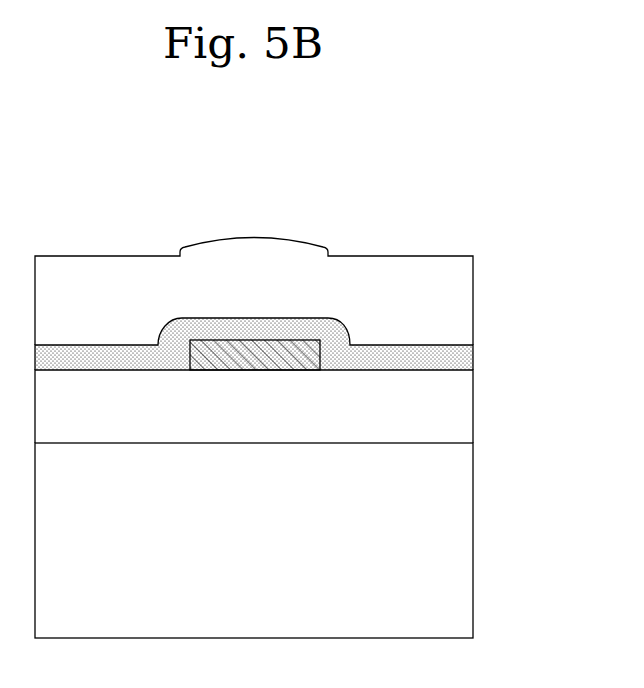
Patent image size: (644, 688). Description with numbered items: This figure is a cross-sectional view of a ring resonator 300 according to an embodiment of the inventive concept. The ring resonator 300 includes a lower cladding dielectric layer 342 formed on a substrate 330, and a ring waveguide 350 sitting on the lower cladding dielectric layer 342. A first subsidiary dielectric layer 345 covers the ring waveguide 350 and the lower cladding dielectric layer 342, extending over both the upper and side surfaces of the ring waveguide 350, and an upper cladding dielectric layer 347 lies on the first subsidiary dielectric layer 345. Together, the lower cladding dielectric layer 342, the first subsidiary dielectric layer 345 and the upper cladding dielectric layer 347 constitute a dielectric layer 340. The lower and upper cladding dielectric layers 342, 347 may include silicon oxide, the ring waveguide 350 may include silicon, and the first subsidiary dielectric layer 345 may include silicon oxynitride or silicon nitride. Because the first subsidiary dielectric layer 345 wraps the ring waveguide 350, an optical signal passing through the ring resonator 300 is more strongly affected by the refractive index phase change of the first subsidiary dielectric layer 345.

The ring resonator 300 is at (533, 168).
The substrate 330 is at (467, 548).
The dielectric layer 340 is at (322, 341).
The lower cladding dielectric layer 342 is at (467, 406).
The first subsidiary dielectric layer 345 is at (467, 356).
The upper cladding dielectric layer 347 is at (292, 292).
The ring waveguide 350 is at (252, 344).